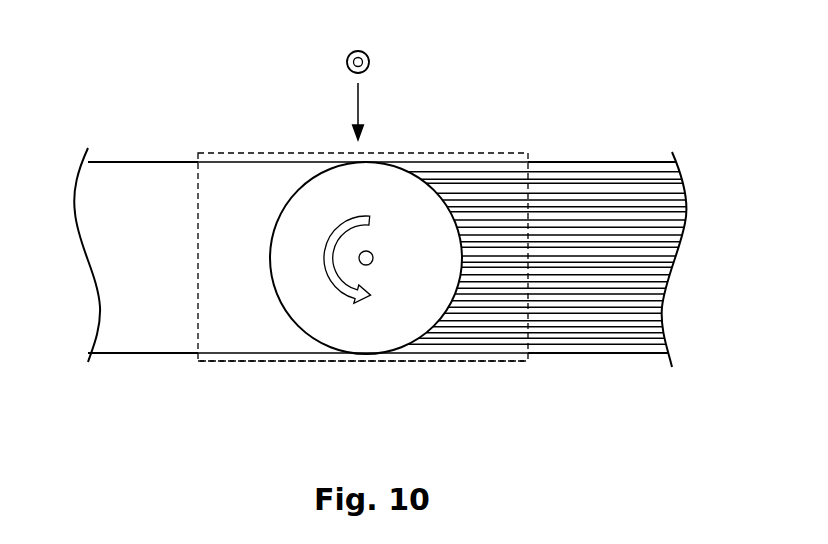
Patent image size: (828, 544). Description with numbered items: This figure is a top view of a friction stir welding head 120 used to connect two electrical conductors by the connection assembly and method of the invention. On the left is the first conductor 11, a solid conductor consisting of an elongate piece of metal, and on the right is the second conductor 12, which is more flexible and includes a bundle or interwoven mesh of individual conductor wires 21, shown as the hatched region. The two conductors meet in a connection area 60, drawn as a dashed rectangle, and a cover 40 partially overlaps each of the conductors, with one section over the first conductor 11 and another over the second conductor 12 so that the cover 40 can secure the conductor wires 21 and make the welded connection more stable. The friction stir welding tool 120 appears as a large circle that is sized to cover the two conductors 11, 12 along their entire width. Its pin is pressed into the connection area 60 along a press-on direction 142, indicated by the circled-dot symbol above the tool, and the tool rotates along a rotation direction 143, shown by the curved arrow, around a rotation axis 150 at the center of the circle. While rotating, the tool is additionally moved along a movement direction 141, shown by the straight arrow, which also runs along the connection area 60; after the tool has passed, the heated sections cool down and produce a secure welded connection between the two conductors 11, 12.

The first conductor 11 is at (138, 165).
The second conductor 12 is at (592, 185).
The conductor wires 21 is at (622, 163).
The cover 40 is at (232, 153).
The connection area 60 is at (326, 362).
The friction stir welding tool 120 is at (384, 167).
The movement direction 141 is at (357, 108).
The press-on direction 142 is at (368, 56).
The rotation direction 143 is at (328, 278).
The rotation axis 150 is at (373, 262).